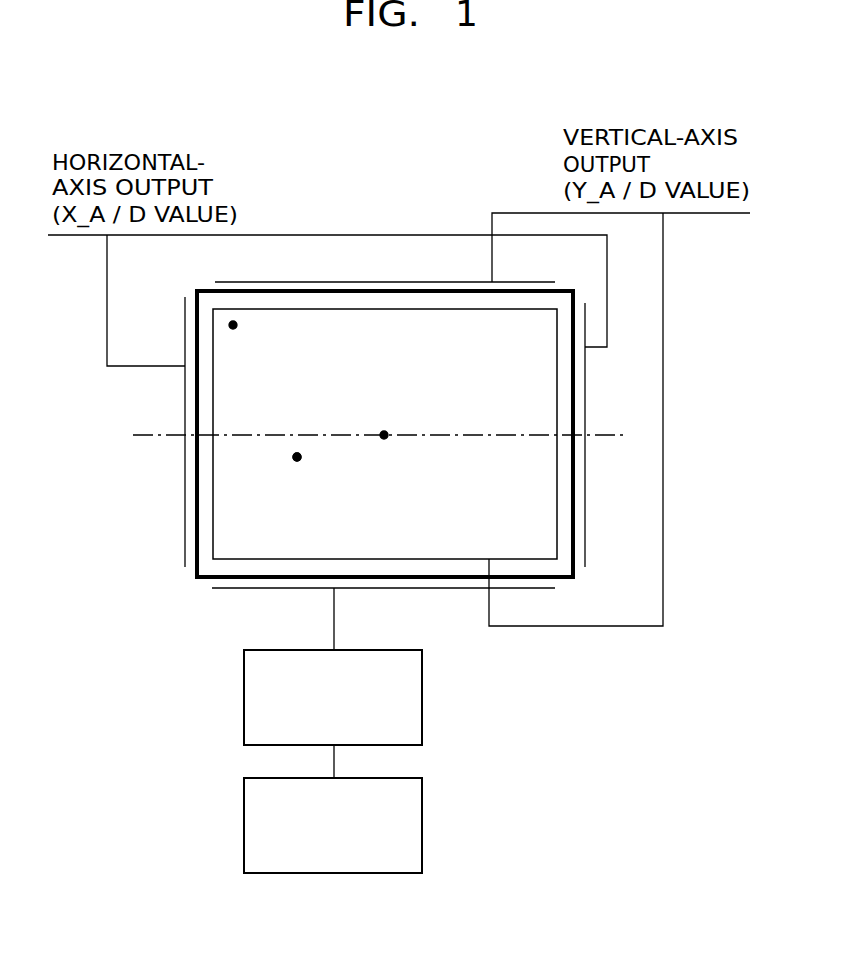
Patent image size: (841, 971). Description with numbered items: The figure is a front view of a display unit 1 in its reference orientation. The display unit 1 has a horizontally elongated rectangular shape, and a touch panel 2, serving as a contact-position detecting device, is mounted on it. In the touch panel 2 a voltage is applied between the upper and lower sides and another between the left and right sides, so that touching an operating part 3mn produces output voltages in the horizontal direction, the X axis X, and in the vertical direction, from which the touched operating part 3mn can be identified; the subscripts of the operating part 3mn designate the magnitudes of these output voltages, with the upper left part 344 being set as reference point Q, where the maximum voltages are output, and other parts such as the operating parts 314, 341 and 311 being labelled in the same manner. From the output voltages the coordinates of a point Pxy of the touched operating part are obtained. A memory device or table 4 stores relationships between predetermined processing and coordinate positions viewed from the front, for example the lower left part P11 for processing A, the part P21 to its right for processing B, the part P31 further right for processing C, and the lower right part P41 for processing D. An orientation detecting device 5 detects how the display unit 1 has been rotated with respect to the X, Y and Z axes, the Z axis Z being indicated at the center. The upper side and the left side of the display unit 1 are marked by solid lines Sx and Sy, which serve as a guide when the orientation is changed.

The display unit 1 is at (310, 168).
The touch panel 2 is at (545, 345).
The solid line (upper side) Sx is at (378, 290).
The solid line (left side) Sy is at (195, 508).
The operating part 3_14 314 is at (540, 328).
The upper left operating part 3_44 344 is at (233, 325).
The operating part 3_41 341 is at (228, 540).
The operating part 3_11 311 is at (543, 537).
The operating part 3mn is at (297, 457).
The point P_xy Pxy is at (297, 457).
The Z axis Z is at (384, 435).
The X axis X is at (612, 432).
The lower left part P_11 P11 is at (249, 540).
The part P_21 P21 is at (325, 540).
The part P_31 P31 is at (448, 542).
The lower right part P_41 P41 is at (526, 542).
The orientation detecting device 5 is at (423, 698).
The memory device (table) 4 is at (423, 818).